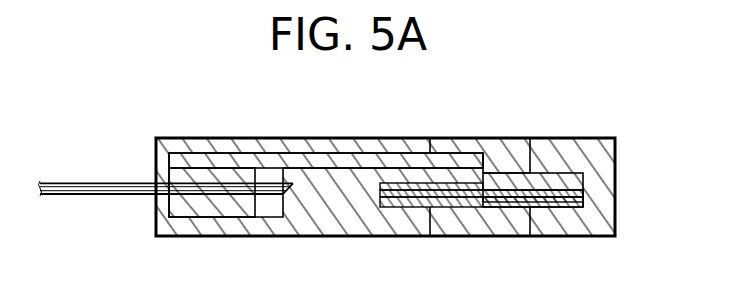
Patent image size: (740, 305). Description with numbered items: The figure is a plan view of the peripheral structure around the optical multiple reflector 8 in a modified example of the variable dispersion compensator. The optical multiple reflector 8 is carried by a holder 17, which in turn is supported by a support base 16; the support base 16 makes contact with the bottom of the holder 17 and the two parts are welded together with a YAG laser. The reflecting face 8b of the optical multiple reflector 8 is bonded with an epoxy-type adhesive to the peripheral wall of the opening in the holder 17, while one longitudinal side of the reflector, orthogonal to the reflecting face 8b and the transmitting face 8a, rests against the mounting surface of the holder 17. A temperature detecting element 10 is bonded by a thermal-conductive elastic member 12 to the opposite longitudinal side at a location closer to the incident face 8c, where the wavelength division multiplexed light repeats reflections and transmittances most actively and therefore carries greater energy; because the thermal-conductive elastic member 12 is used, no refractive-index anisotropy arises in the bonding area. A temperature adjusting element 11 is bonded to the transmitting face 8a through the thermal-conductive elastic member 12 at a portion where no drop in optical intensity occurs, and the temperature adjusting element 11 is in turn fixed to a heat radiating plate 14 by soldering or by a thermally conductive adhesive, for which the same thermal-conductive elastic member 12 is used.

The optical multiple reflector 8 is at (557, 200).
The transmitting face 8a is at (543, 190).
The reflecting face 8b is at (478, 203).
The incident face 8c is at (583, 195).
The temperature detecting element 10 is at (521, 195).
The temperature adjusting element 11 is at (347, 162).
The thermal-conductive elastic member 12 is at (409, 178).
The heat radiating plate 14 is at (215, 205).
The support base 16 is at (500, 150).
The holder 17 is at (403, 208).